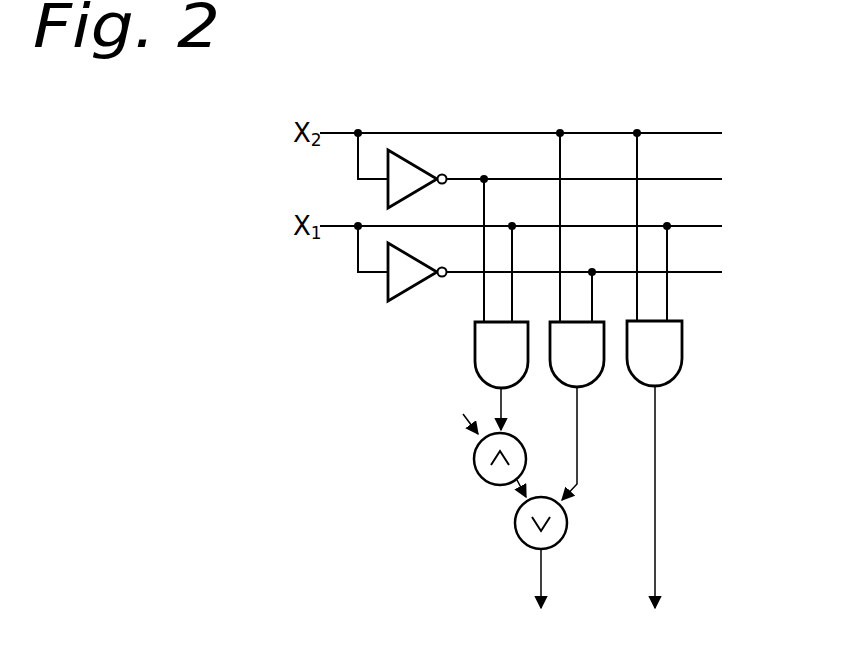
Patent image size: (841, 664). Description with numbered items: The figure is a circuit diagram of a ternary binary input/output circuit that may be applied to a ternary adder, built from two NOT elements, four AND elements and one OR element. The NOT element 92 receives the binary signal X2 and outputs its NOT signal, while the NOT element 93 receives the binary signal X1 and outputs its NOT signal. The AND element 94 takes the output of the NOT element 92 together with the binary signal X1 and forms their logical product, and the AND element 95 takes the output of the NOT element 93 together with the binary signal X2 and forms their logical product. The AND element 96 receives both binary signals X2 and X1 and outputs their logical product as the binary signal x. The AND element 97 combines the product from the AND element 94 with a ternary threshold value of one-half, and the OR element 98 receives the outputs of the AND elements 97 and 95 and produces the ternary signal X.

The NOT element 92 is at (412, 163).
The NOT element 93 is at (412, 256).
The AND element 94 is at (475, 338).
The AND element 95 is at (600, 377).
The AND element 96 is at (682, 362).
The AND element 97 is at (525, 411).
The OR element 98 is at (568, 517).